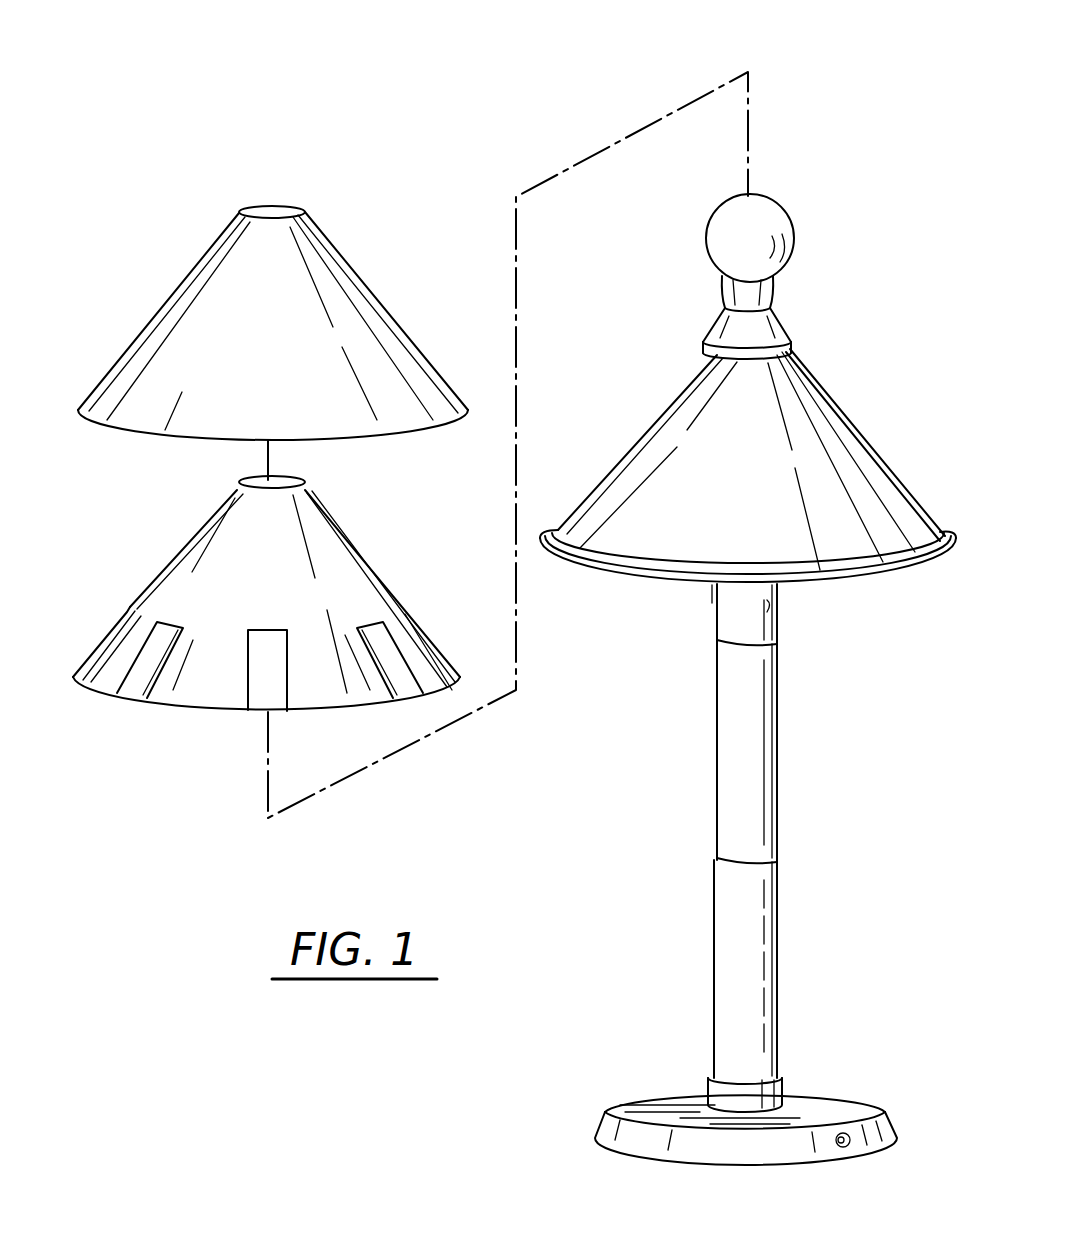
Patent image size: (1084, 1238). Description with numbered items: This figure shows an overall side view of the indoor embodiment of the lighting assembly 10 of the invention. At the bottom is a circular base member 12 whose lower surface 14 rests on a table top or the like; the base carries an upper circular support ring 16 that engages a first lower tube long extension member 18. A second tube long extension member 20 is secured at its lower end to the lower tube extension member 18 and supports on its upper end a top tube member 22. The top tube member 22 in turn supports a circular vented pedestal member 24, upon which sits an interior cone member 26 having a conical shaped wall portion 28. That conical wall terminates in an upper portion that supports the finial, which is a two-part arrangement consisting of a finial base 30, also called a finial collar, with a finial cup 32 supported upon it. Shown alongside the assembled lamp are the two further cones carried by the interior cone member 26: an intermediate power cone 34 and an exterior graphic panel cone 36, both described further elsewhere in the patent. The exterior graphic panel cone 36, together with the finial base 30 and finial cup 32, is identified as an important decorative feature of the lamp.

The lighting assembly 10 is at (818, 714).
The circular base member 12 is at (607, 1125).
The lower surface 14 is at (820, 1158).
The upper circular support ring 16 is at (728, 1092).
The first lower tube long extension member 18 is at (735, 912).
The second tube long extension member 20 is at (728, 727).
The top tube member 22 is at (727, 612).
The circular vented pedestal member 24 is at (618, 577).
The interior cone member 26 is at (751, 459).
The conical shaped wall portion 28 is at (753, 484).
The finial base 30 is at (772, 310).
The finial cup 32 is at (757, 222).
The intermediate power cone 34 is at (337, 555).
The exterior graphic panel cone 36 is at (323, 267).